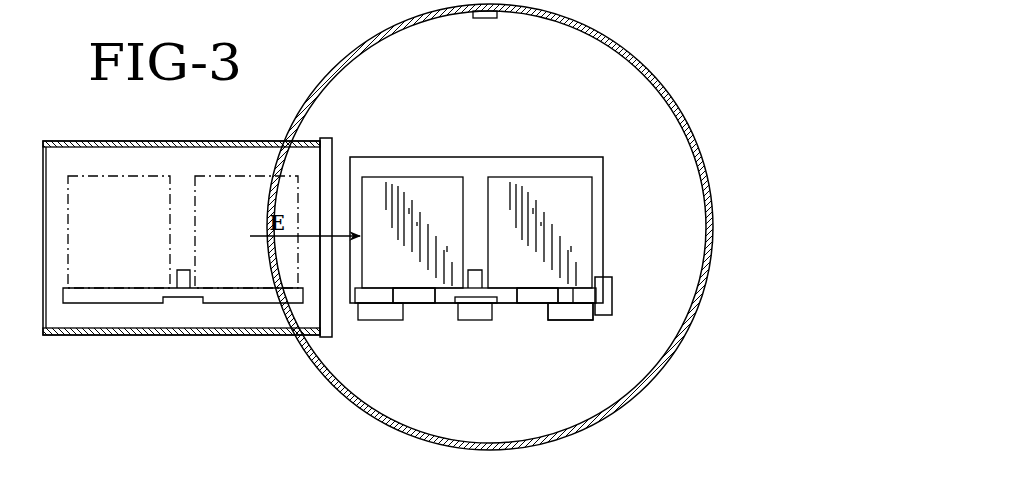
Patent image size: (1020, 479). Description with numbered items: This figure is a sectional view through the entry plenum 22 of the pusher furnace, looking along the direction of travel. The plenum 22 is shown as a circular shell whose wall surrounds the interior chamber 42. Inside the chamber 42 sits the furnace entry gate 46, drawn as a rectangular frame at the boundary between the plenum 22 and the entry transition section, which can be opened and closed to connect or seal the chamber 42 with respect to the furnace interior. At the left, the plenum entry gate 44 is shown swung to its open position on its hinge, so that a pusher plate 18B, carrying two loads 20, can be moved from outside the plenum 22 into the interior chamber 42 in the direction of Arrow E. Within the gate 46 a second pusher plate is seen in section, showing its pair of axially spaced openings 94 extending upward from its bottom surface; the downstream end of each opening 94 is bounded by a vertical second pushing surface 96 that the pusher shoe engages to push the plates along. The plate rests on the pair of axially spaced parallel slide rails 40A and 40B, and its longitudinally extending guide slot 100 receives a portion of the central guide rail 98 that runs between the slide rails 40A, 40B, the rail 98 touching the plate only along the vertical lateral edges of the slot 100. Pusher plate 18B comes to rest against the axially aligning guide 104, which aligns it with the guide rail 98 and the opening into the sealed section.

The entry plenum 22 is at (631, 37).
The interior chamber 42 is at (626, 81).
The plenum entry gate 44 is at (332, 144).
The furnace entry gate 46 is at (395, 160).
The load 20 is at (428, 188).
The opening 94 is at (412, 300).
The second pushing surface 96 is at (414, 305).
The central guide rail 98 is at (468, 323).
The guide slot 100 is at (183, 300).
The axially aligning guide 104 is at (609, 294).
The slide rail 40A is at (380, 323).
The slide rail 40B is at (589, 326).
The pusher plate 18B is at (92, 308).